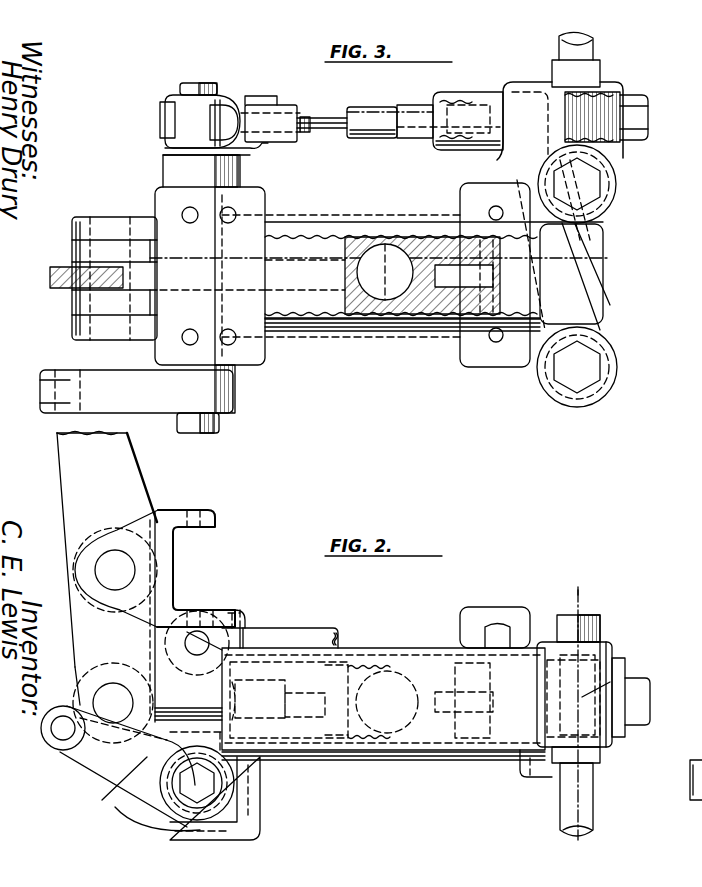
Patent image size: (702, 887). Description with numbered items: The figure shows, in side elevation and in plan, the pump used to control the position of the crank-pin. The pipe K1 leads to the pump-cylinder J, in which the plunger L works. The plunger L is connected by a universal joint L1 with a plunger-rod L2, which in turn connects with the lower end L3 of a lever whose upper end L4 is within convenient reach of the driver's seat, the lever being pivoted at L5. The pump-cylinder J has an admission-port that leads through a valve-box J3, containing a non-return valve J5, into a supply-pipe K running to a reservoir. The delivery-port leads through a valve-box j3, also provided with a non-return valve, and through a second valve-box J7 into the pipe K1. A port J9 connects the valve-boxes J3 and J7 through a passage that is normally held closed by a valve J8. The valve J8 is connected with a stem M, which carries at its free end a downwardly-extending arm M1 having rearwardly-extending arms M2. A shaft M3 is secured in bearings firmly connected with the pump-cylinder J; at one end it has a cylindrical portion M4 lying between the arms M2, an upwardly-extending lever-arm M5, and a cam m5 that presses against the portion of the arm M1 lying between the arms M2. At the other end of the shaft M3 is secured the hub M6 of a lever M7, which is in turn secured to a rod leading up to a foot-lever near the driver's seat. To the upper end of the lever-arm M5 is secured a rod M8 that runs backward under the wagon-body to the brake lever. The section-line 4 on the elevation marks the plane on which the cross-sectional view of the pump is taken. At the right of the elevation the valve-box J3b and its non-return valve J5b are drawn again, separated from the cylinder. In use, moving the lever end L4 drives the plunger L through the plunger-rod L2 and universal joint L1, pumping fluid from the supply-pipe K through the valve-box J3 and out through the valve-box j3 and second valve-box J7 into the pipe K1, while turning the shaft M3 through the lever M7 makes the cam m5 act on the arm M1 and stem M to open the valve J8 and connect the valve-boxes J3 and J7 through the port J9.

In FIG. 3, the pump-cylinder J is at (436, 324).
In FIG. 2, the pump-cylinder J is at (422, 740).
In FIG. 3, the valve-box J3 is at (593, 367).
In FIG. 2, the valve-box J3 is at (610, 682).
In FIG. 3, the valve-box j3 is at (589, 184).
In FIG. 2, the non-return valve J5 is at (620, 653).
In FIG. 3, the second valve-box J7 is at (604, 78).
In FIG. 3, the valve J8 is at (600, 110).
In FIG. 3, the port J9 is at (618, 270).
In FIG. 2, the port J9 is at (550, 768).
In FIG. 2, the supply-pipe K is at (576, 715).
In FIG. 3, the pipe K1 is at (594, 52).
In FIG. 3, the plunger L is at (420, 300).
In FIG. 2, the plunger L is at (458, 710).
In FIG. 3, the universal joint L1 is at (406, 238).
In FIG. 2, the universal joint L1 is at (396, 690).
In FIG. 3, the plunger-rod L2 is at (272, 300).
In FIG. 2, the plunger-rod L2 is at (188, 717).
In FIG. 2, the lower end of lever L3 is at (156, 626).
In FIG. 3, the upper end of lever L4 is at (55, 288).
In FIG. 2, the upper end of lever L4 is at (107, 577).
In FIG. 3, the pivot L5 is at (95, 313).
In FIG. 2, the pivot L5 is at (115, 568).
In FIG. 3, the stem M is at (322, 120).
In FIG. 2, the stem M is at (315, 705).
In FIG. 3, the downwardly-extending arm M1 is at (262, 146).
In FIG. 2, the downwardly-extending arm M1 is at (282, 730).
In FIG. 3, the rearwardly-extending arms M2 is at (160, 146).
In FIG. 2, the rearwardly-extending arms M2 is at (109, 783).
In FIG. 3, the shaft M3 is at (205, 432).
In FIG. 2, the shaft M3 is at (197, 783).
In FIG. 3, the cylindrical portion M4 is at (150, 156).
In FIG. 3, the lever-arm M5 is at (202, 115).
In FIG. 2, the lever-arm M5 is at (202, 645).
In FIG. 3, the hub M6 is at (209, 389).
In FIG. 2, the hub M6 is at (157, 812).
In FIG. 3, the lever M7 is at (136, 391).
In FIG. 2, the lever M7 is at (118, 766).
In FIG. 3, the rod M8 is at (306, 134).
In FIG. 2, the rod M8 is at (302, 642).
In FIG. 2, the cam m5 is at (260, 830).
In FIG. 2, the section-line 4 is at (574, 685).
In FIG. 2, the bolt head (detached) J3b is at (701, 700).
In FIG. 2, the collar (detached) J5b is at (701, 728).